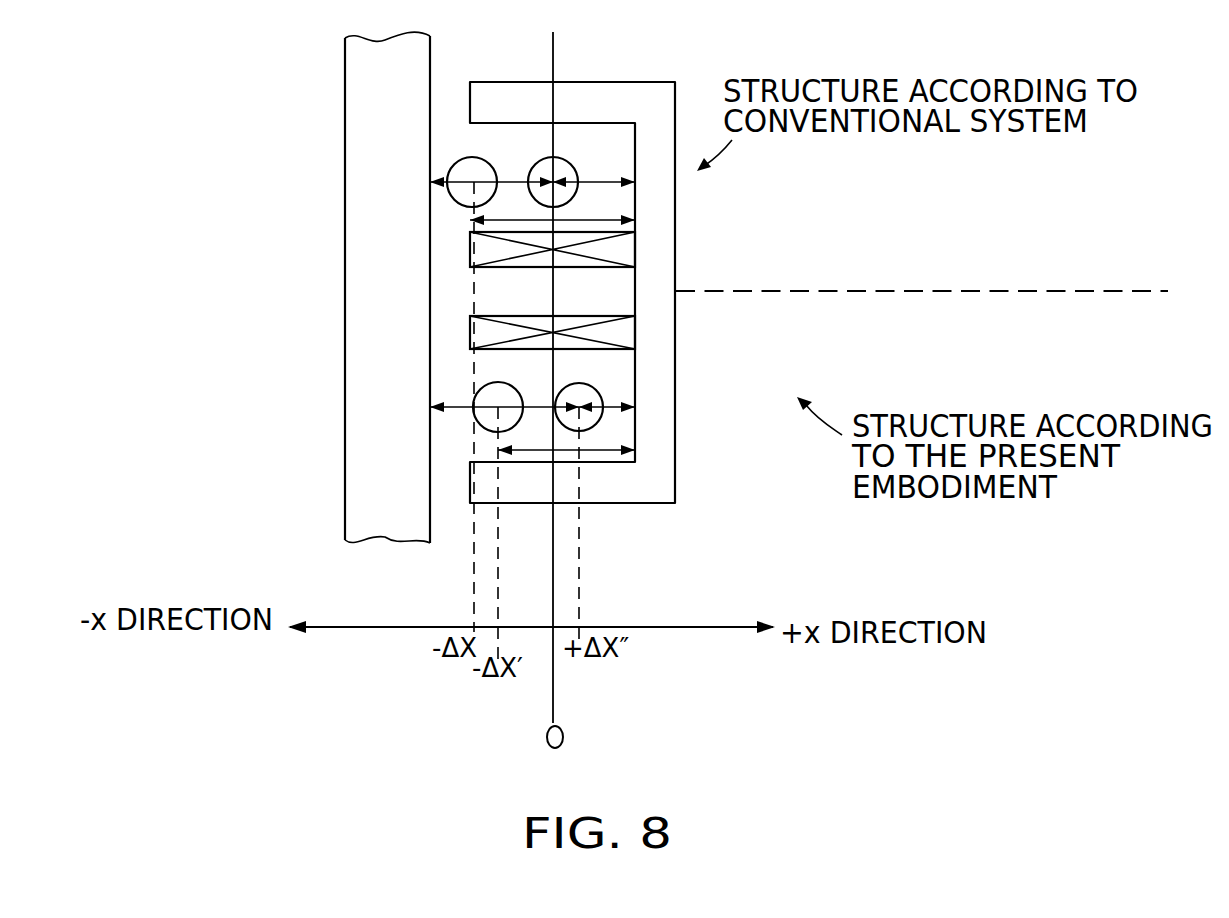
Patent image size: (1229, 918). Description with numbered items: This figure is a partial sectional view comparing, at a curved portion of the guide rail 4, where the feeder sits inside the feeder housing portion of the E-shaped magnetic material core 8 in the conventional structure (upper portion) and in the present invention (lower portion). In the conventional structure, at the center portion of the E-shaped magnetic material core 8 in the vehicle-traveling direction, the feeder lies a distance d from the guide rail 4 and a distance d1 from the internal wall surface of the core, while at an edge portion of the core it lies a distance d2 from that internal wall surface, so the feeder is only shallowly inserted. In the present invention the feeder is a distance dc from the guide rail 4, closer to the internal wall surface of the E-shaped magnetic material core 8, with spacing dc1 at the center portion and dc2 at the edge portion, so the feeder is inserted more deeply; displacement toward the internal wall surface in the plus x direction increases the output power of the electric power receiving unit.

The guide rail 4 is at (332, 278).
The E-shaped magnetic material core 8 is at (631, 82).
The distance d is at (508, 176).
The distance d1 is at (591, 176).
The distance d2 is at (579, 226).
The distance dc is at (535, 402).
The distance dc1 is at (613, 402).
The distance dc2 is at (602, 448).